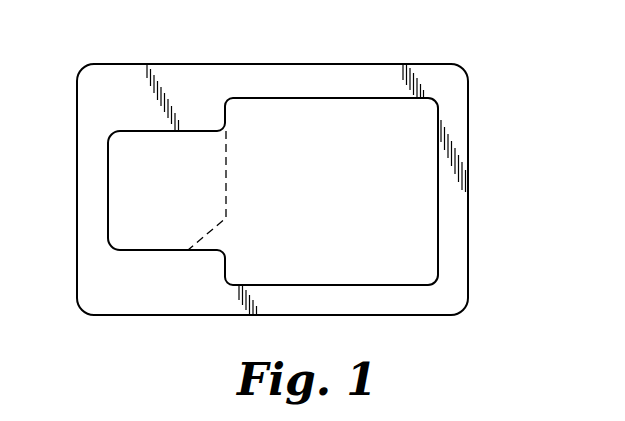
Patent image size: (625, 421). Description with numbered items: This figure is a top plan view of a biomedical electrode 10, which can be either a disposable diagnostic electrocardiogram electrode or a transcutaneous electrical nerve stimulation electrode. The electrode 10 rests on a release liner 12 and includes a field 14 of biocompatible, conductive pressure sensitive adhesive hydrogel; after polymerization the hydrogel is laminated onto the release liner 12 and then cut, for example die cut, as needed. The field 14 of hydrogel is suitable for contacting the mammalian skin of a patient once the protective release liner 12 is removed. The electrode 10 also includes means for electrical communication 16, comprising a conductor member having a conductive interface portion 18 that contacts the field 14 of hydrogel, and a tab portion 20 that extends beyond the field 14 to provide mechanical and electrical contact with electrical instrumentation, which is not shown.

The biomedical electrode 10 is at (268, 184).
The release liner 12 is at (455, 88).
The field of pressure sensitive adhesive hydrogel 14 is at (188, 250).
The means for electrical communication 16 is at (428, 225).
The conductive interface portion 18 is at (242, 265).
The tab portion 20 is at (117, 202).